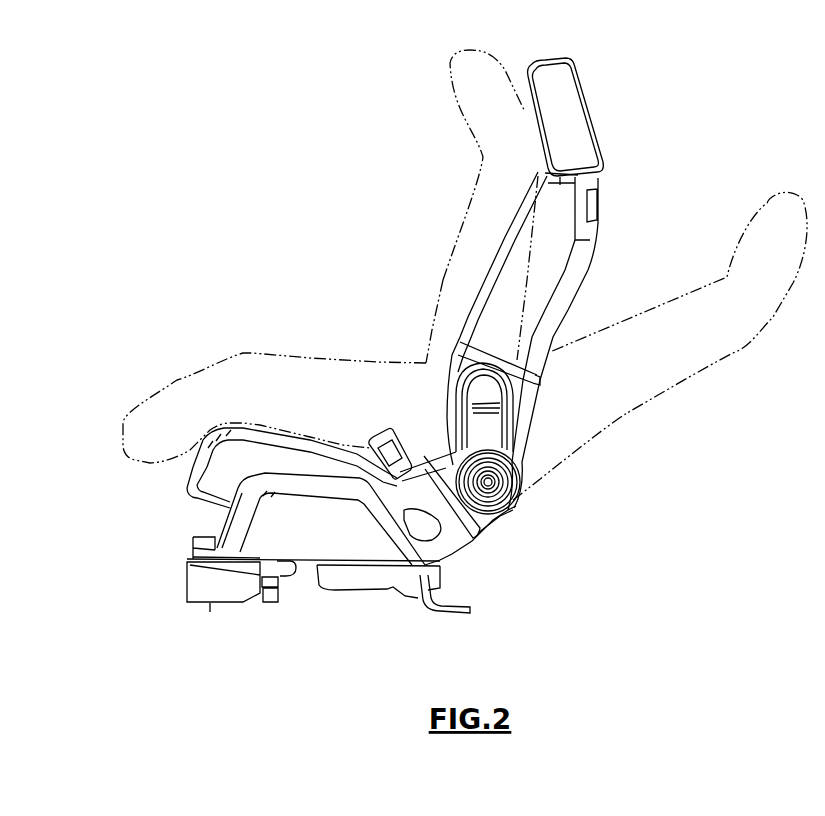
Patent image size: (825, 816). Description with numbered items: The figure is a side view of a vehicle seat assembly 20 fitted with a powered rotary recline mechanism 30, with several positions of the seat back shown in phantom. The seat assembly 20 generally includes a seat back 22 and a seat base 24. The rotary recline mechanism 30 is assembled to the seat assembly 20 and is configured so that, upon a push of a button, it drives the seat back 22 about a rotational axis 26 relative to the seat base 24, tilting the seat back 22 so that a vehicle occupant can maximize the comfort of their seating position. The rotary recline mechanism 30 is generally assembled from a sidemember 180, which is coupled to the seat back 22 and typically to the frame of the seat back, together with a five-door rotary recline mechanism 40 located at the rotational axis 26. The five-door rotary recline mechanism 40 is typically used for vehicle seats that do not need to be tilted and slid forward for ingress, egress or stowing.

The seat assembly 20 is at (302, 300).
The seat back 22 is at (558, 254).
The seat base 24 is at (190, 493).
The rotational axis 26 is at (500, 480).
The rotary recline mechanism 30 is at (516, 513).
The five-door rotary recline mechanism 40 is at (483, 510).
The sidemember 180 is at (505, 414).